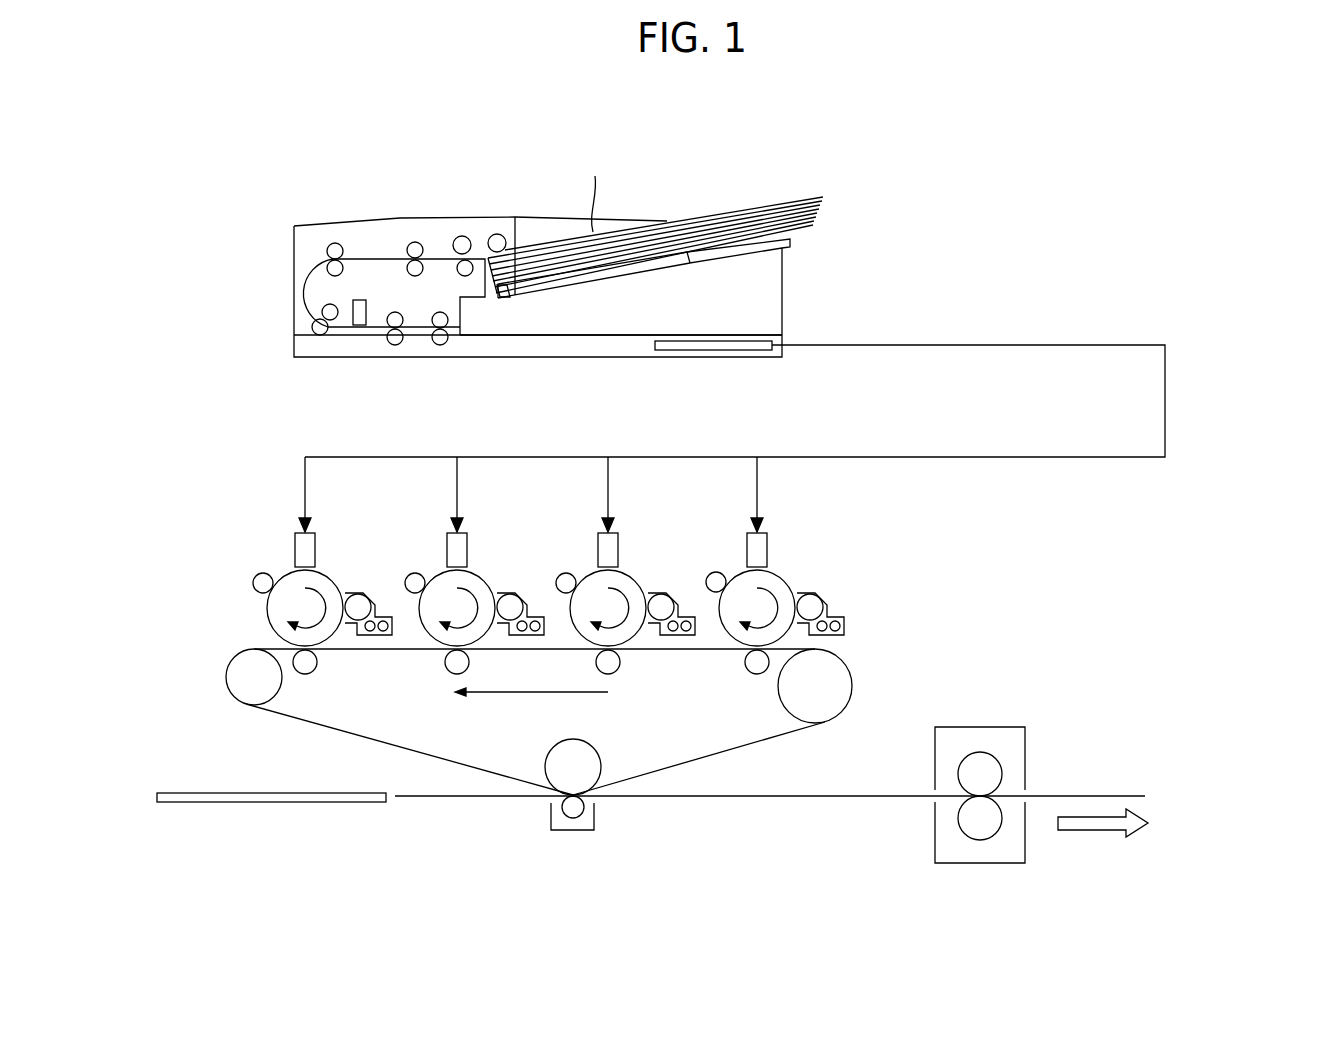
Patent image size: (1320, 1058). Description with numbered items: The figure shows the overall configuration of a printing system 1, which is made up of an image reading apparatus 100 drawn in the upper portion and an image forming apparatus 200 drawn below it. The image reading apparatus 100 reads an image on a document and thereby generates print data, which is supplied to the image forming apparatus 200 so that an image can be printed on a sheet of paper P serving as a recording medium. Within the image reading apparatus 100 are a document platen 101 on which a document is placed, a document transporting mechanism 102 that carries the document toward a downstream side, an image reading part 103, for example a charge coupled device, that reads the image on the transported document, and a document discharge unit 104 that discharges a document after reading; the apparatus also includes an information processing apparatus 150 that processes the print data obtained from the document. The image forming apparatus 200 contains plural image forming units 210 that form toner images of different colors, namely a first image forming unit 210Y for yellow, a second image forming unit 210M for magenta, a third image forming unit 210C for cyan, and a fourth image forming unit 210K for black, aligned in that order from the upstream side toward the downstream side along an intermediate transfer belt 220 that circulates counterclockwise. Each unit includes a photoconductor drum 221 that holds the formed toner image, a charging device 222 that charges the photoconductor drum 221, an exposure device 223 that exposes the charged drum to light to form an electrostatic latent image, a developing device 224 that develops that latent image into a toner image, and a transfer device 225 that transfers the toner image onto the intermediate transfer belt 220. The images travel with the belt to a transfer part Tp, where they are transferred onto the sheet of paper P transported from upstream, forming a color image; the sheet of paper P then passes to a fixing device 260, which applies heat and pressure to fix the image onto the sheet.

The printing system 1 is at (1195, 164).
The image reading apparatus 100 is at (270, 207).
The document platen 101 is at (760, 251).
The document transporting mechanism 102 is at (380, 232).
The image reading part 103 is at (357, 298).
The document discharge unit 104 is at (541, 323).
The information processing apparatus 150 is at (703, 352).
The image forming apparatus 200 is at (260, 449).
The image forming unit 210 is at (536, 592).
The fourth image forming unit 210K is at (258, 540).
The third image forming unit 210C is at (412, 541).
The second image forming unit 210M is at (566, 541).
The first image forming unit 210Y is at (721, 538).
The intermediate transfer belt 220 is at (727, 753).
The photoconductor drum 221 is at (782, 573).
The charging device 222 is at (706, 572).
The exposure device 223 is at (768, 537).
The developing device 224 is at (823, 603).
The transfer device 225 is at (757, 673).
The fixing device 260 is at (915, 855).
The sheet of paper P is at (313, 805).
The transfer part Tp is at (537, 808).